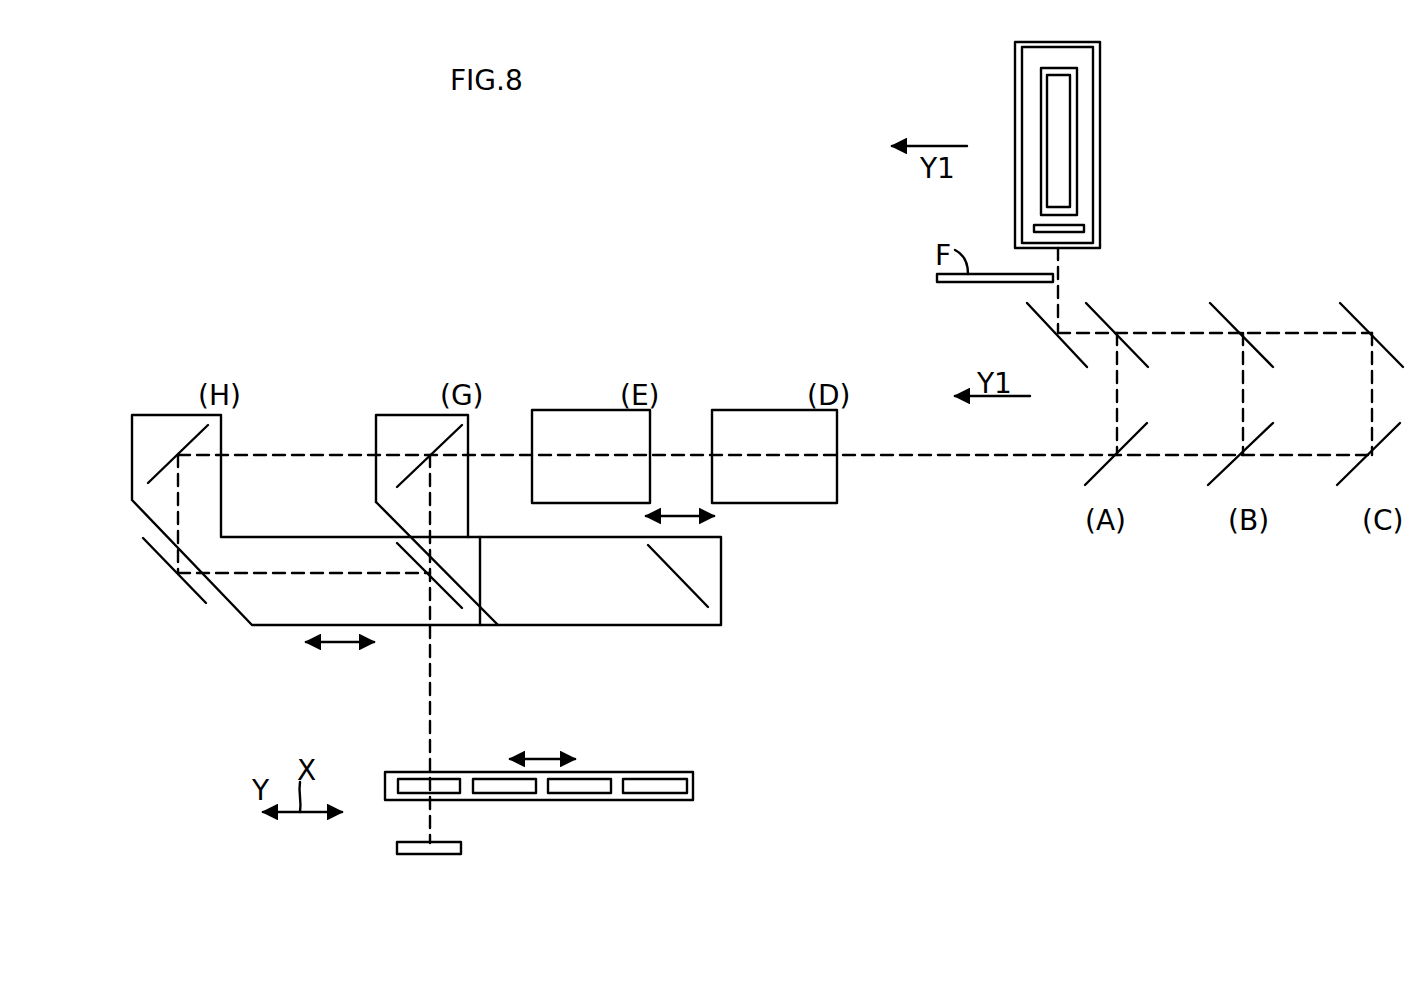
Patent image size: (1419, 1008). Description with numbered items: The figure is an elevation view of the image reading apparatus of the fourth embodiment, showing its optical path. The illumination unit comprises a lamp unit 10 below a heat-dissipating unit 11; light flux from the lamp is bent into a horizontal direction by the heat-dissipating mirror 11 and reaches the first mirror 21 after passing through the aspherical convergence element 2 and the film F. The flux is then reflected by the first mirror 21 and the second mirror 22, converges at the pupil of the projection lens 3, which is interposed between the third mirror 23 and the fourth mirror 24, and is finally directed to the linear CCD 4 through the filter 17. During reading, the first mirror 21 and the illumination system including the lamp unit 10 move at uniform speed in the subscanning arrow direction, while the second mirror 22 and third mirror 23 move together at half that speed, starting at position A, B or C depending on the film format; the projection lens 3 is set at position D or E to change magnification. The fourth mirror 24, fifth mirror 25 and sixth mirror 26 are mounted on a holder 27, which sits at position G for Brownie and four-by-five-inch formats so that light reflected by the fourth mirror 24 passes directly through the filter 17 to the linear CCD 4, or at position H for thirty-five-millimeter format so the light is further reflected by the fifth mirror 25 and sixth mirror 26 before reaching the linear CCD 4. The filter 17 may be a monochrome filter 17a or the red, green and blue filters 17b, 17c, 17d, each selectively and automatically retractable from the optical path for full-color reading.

The aspherical convergence element 2 is at (1083, 227).
The projection lens 3 is at (575, 410).
The linear charge-coupled device 4 is at (397, 850).
The lamp unit 10 is at (1078, 122).
The heat-dissipating unit 11 is at (1055, 170).
The filter 17 is at (543, 788).
The monochrome image filter 17a is at (403, 780).
The red filter 17b is at (512, 793).
The green filter 17c is at (590, 793).
The blue filter 17d is at (680, 800).
The first mirror 21 is at (1040, 321).
The second mirror 22 is at (1097, 313).
The third mirror 23 is at (1097, 472).
The fourth mirror 24 is at (203, 427).
The fifth mirror 25 is at (192, 592).
The sixth mirror 26 is at (450, 598).
The holder 27 is at (232, 606).